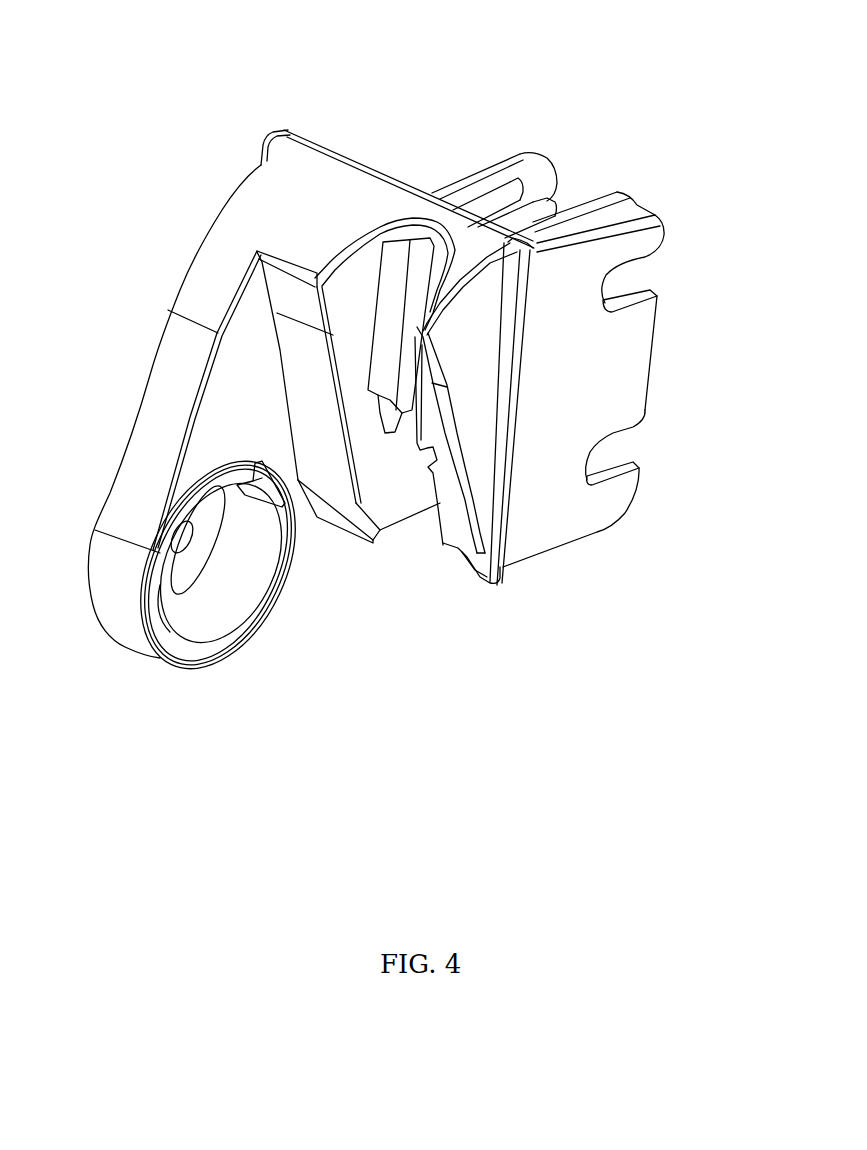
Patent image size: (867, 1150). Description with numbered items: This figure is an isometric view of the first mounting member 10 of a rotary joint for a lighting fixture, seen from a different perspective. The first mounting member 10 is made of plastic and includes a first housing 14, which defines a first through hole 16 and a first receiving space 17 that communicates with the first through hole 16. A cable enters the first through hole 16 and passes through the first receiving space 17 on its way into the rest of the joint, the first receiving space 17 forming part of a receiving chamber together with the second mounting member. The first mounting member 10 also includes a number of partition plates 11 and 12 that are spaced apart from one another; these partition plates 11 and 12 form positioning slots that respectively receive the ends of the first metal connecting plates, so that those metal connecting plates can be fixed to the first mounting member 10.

The first mounting member 10 is at (370, 163).
The partition plate 11 is at (540, 153).
The partition plate 12 is at (520, 187).
The first housing 14 is at (145, 403).
The first through hole 16 is at (257, 465).
The first receiving space 17 is at (157, 660).